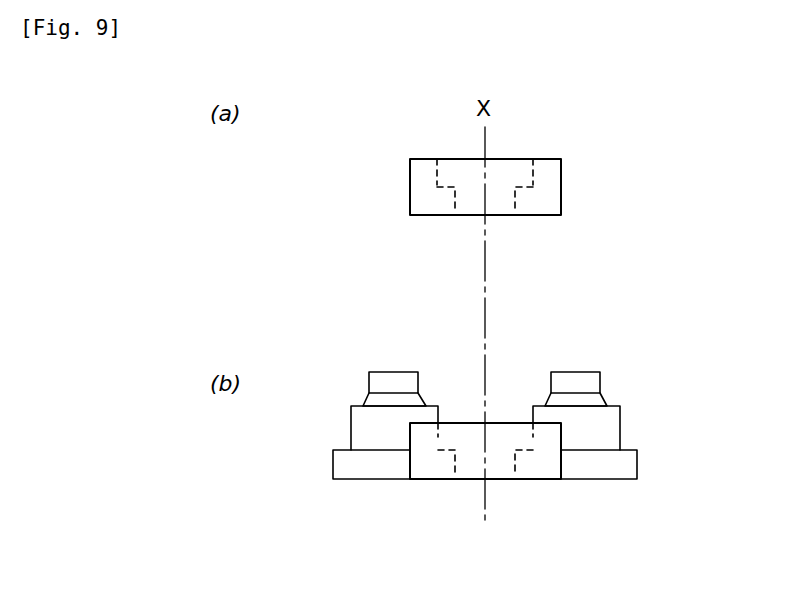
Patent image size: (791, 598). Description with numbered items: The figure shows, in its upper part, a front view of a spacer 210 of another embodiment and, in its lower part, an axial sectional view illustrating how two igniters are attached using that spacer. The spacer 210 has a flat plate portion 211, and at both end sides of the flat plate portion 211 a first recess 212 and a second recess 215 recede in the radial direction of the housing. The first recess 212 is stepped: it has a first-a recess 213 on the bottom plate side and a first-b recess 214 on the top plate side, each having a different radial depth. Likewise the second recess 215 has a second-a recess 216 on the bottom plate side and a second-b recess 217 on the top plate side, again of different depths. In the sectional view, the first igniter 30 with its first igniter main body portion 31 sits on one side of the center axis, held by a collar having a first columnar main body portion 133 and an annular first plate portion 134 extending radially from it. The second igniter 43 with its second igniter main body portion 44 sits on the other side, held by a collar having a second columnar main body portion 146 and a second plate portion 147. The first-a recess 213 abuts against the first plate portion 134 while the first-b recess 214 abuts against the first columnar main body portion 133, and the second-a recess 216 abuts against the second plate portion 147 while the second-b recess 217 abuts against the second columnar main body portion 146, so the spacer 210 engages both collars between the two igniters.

The spacer 210 is at (545, 155).
The flat plate portion 211 is at (502, 177).
The first recess 212 is at (305, 201).
The first-a recess 213 is at (455, 205).
The first-b recess 214 is at (437, 166).
The second recess 215 is at (667, 150).
The second-a recess 216 is at (515, 206).
The second-b recess 217 is at (533, 167).
The first igniter 30 is at (385, 373).
The first igniter main body portion 31 is at (408, 382).
The first columnar main body portion 133 is at (362, 426).
The first plate portion 134 is at (345, 472).
The second igniter 43 is at (562, 372).
The second igniter main body portion 44 is at (585, 382).
The second columnar main body portion 146 is at (607, 422).
The second plate portion 147 is at (623, 467).